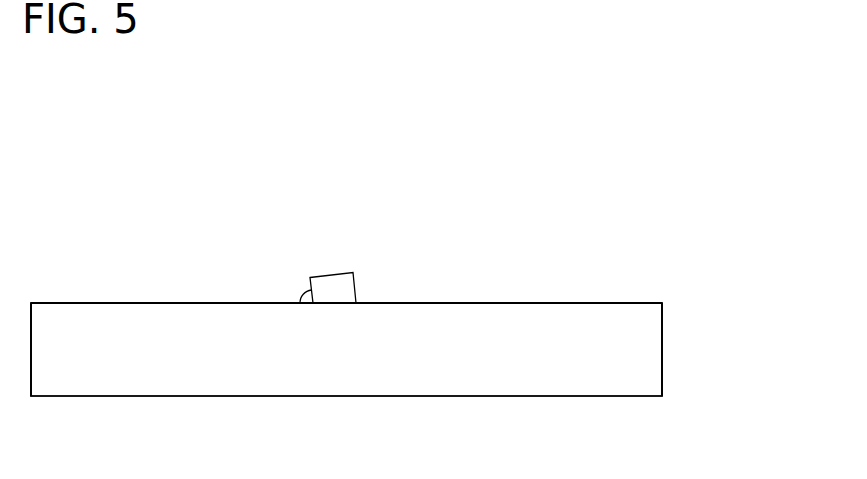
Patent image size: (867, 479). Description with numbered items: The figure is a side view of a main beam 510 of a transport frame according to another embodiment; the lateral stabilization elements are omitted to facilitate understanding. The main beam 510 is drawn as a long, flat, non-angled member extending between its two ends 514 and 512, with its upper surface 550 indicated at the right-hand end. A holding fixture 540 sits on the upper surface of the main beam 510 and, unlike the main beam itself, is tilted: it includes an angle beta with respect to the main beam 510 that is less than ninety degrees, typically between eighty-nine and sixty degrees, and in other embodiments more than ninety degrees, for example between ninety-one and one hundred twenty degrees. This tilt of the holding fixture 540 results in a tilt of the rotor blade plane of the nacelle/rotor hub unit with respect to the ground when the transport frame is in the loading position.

The main beam 510 is at (158, 150).
The second end of substrate 512 is at (617, 315).
The first end of substrate 514 is at (76, 315).
The holding fixture 540 is at (337, 271).
The substrate surface 550 is at (692, 324).